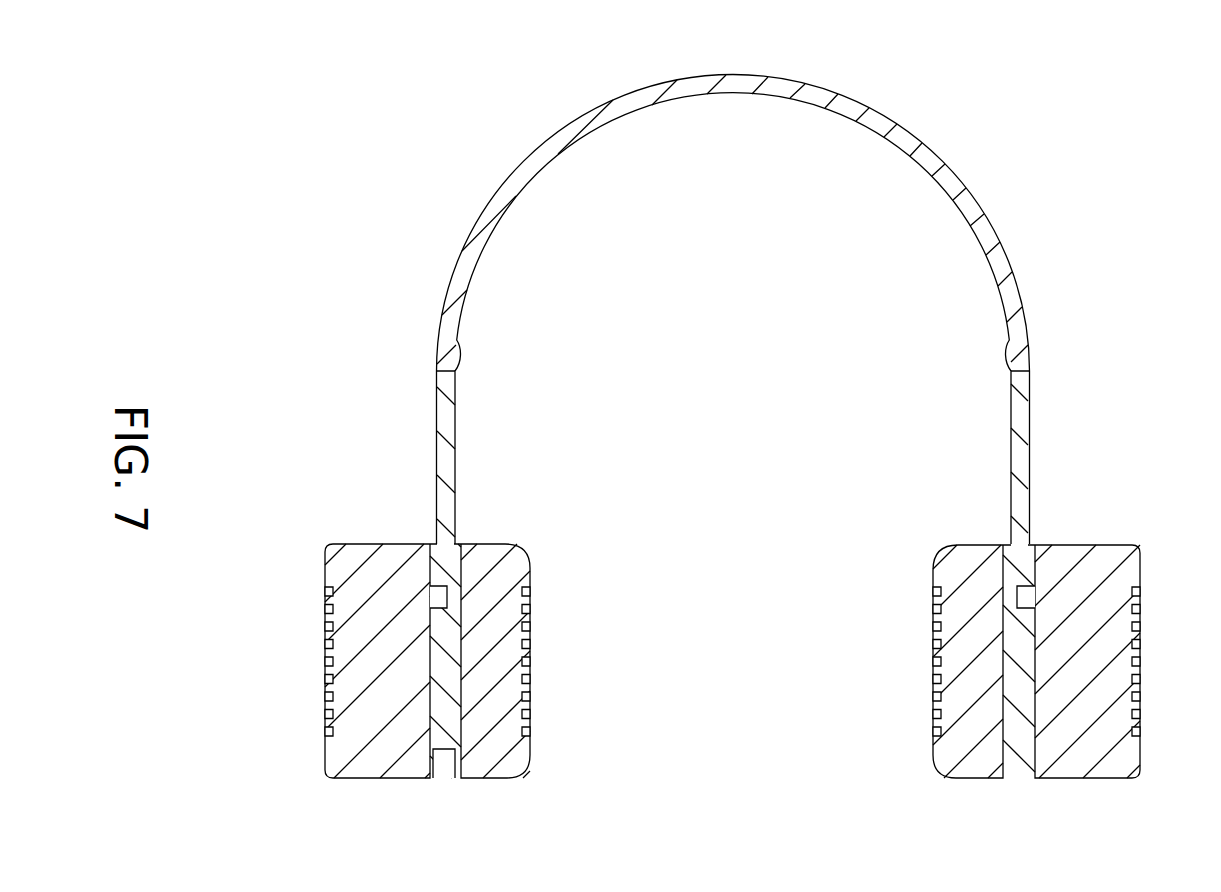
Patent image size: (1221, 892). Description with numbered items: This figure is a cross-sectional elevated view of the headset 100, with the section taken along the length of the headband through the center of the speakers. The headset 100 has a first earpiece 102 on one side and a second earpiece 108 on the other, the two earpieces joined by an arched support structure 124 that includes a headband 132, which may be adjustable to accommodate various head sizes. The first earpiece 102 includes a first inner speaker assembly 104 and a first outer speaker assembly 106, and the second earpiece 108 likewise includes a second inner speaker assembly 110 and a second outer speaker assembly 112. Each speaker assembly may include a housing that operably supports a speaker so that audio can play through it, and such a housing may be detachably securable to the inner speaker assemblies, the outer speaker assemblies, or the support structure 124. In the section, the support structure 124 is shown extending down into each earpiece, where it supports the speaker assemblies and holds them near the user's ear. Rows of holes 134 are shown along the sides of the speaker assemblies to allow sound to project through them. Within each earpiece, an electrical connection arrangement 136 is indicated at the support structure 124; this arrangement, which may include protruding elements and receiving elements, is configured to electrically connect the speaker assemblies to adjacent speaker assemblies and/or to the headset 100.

The headset 100 is at (1117, 163).
The first earpiece 102 is at (528, 470).
The first inner speaker assembly 104 is at (540, 548).
The first outer speaker assembly 106 is at (307, 541).
The second earpiece 108 is at (1116, 442).
The second inner speaker assembly 110 is at (912, 540).
The second outer speaker assembly 112 is at (1135, 537).
The support structure 124 is at (543, 128).
The headband 132 is at (903, 145).
The holes 134 is at (330, 680).
The electrical connection arrangement 136 is at (435, 600).